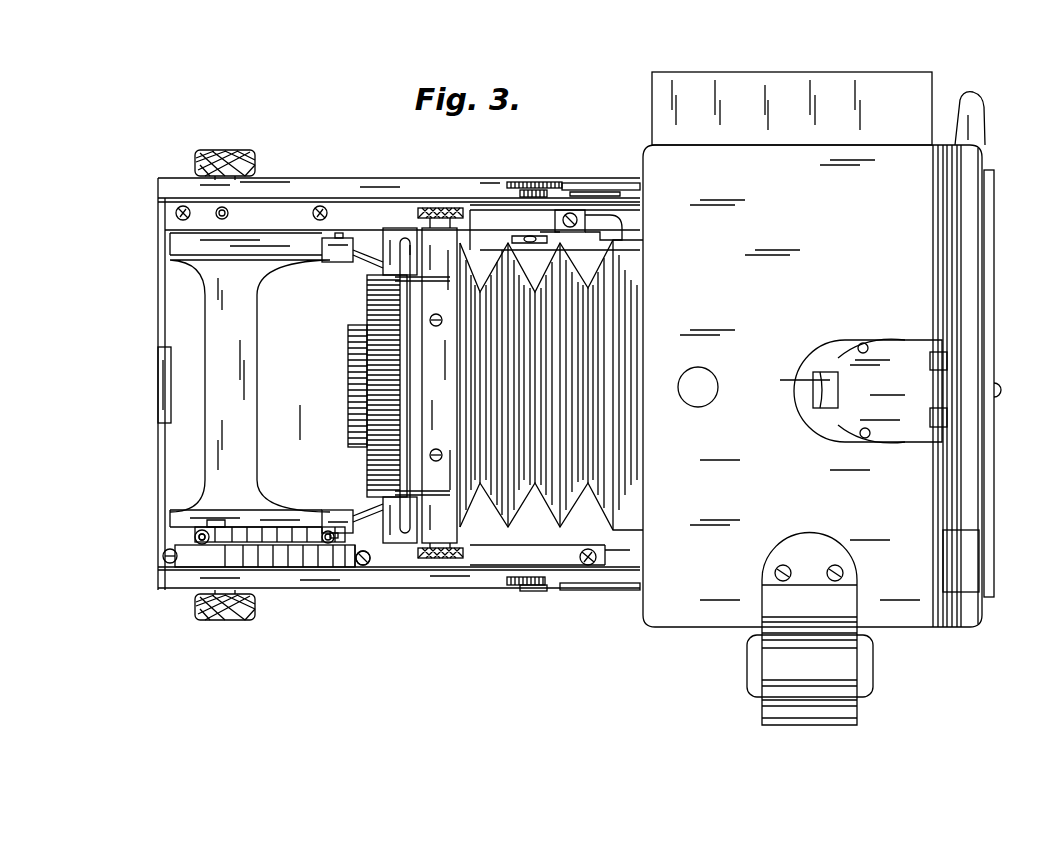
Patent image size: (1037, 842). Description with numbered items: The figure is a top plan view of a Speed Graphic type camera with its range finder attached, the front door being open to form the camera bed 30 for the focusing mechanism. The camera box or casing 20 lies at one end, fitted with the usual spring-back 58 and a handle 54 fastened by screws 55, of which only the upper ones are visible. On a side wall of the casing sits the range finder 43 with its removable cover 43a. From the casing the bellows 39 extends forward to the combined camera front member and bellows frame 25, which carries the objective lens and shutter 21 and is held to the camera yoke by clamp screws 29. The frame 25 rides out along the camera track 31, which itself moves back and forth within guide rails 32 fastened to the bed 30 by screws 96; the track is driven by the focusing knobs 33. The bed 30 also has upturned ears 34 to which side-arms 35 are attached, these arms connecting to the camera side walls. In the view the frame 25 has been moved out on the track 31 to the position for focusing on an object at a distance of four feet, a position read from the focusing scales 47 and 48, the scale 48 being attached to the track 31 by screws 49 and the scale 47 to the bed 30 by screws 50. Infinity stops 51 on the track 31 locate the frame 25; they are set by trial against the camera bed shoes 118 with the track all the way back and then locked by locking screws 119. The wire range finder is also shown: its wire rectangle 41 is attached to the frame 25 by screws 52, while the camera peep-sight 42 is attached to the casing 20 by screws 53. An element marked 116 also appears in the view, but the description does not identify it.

The camera box or casing 20 is at (727, 615).
The objective lens and shutter 21 is at (385, 452).
The combined camera front member and bellows frame 25 is at (432, 545).
The clamp screws 29 is at (446, 208).
The camera bed 30 is at (160, 313).
The camera track 31 is at (243, 320).
The guide rails 32 is at (287, 212).
The focusing knobs 33 is at (230, 151).
The upturned ears 34 is at (534, 181).
The side-arms 35 is at (607, 182).
The bellows 39 is at (600, 320).
The wire rectangle 41 is at (412, 378).
The camera peep-sight 42 is at (832, 413).
The range finder 43 is at (665, 66).
The removable cover 43a is at (925, 96).
The focusing scale 47 is at (322, 567).
The focusing scale 48 is at (215, 527).
The screws 49 is at (205, 522).
The screws 50 is at (160, 550).
The infinity stops 51 is at (326, 250).
The screws 52 is at (436, 327).
The screws 53 is at (866, 344).
The handle 54 is at (848, 710).
The screws 55 is at (775, 573).
The spring-back 58 is at (958, 489).
The screws 96 is at (175, 214).
The bed 116 is at (343, 186).
The camera bed shoes 118 is at (373, 262).
The locking screws 119 is at (340, 242).